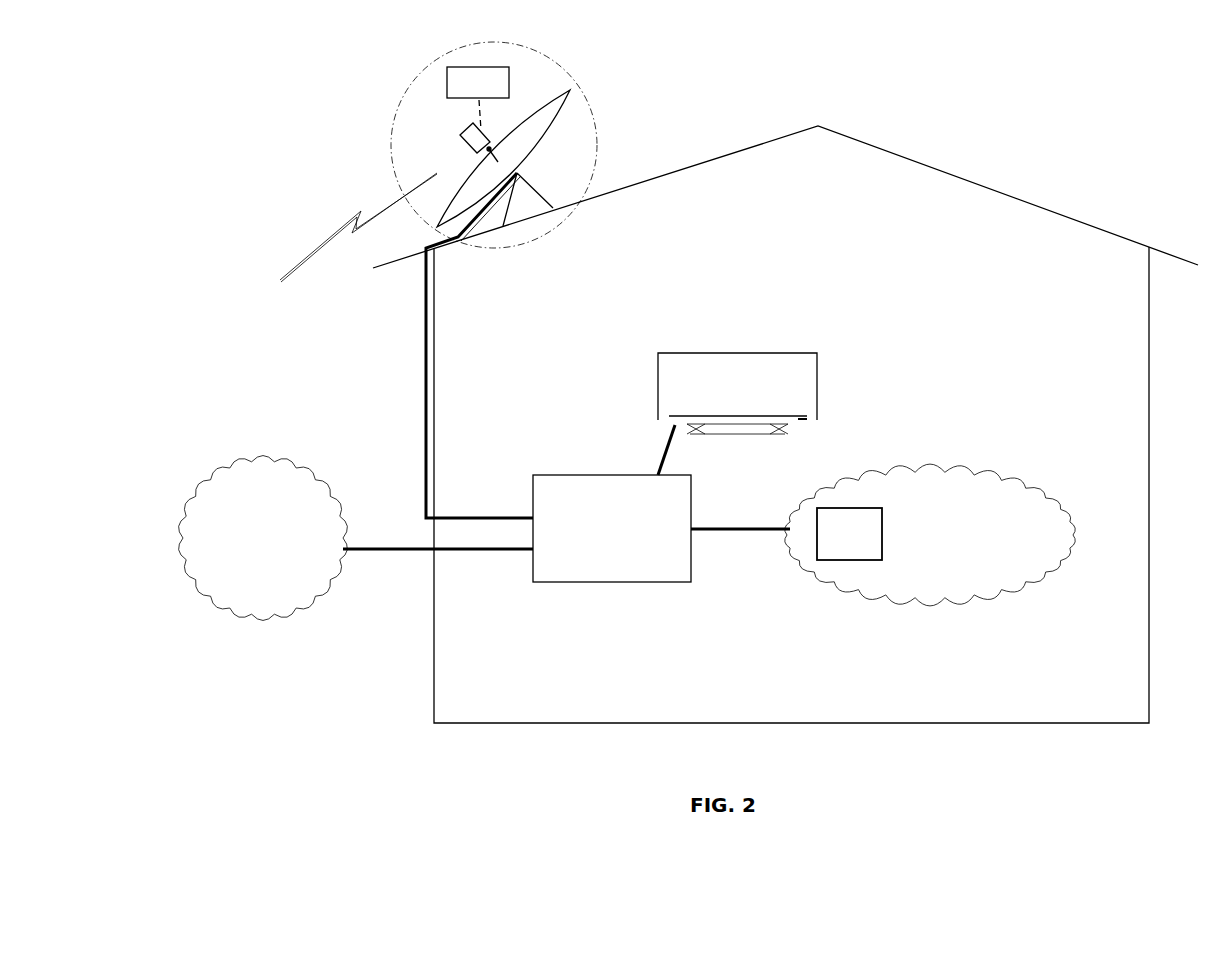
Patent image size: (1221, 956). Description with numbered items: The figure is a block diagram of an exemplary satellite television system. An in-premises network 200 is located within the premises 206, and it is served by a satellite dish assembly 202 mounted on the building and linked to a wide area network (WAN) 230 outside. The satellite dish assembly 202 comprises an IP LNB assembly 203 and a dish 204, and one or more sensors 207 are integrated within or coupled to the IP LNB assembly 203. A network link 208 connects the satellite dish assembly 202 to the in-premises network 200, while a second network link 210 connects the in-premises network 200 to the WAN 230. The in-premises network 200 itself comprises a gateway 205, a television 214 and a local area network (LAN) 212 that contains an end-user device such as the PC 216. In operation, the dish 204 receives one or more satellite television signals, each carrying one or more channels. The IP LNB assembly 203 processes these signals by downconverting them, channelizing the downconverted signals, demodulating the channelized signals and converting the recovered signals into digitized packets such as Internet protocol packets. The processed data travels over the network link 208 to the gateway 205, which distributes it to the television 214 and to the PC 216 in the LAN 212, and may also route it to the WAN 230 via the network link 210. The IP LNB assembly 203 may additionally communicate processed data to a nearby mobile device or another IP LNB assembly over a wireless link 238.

The in-premises network 200 is at (1044, 296).
The satellite dish assembly 202 is at (598, 147).
The IP LNB assembly 203 is at (466, 130).
The dish 204 is at (550, 112).
The gateway 205 is at (599, 549).
The premises 206 is at (1025, 203).
The sensors 207 is at (464, 91).
The network link 208 is at (424, 343).
The network link 210 is at (408, 549).
The local area network (LAN) 212 is at (915, 554).
The television 214 is at (676, 353).
The PC 216 is at (837, 554).
The wide area network (WAN) 230 is at (250, 559).
The wireless link 238 is at (320, 247).